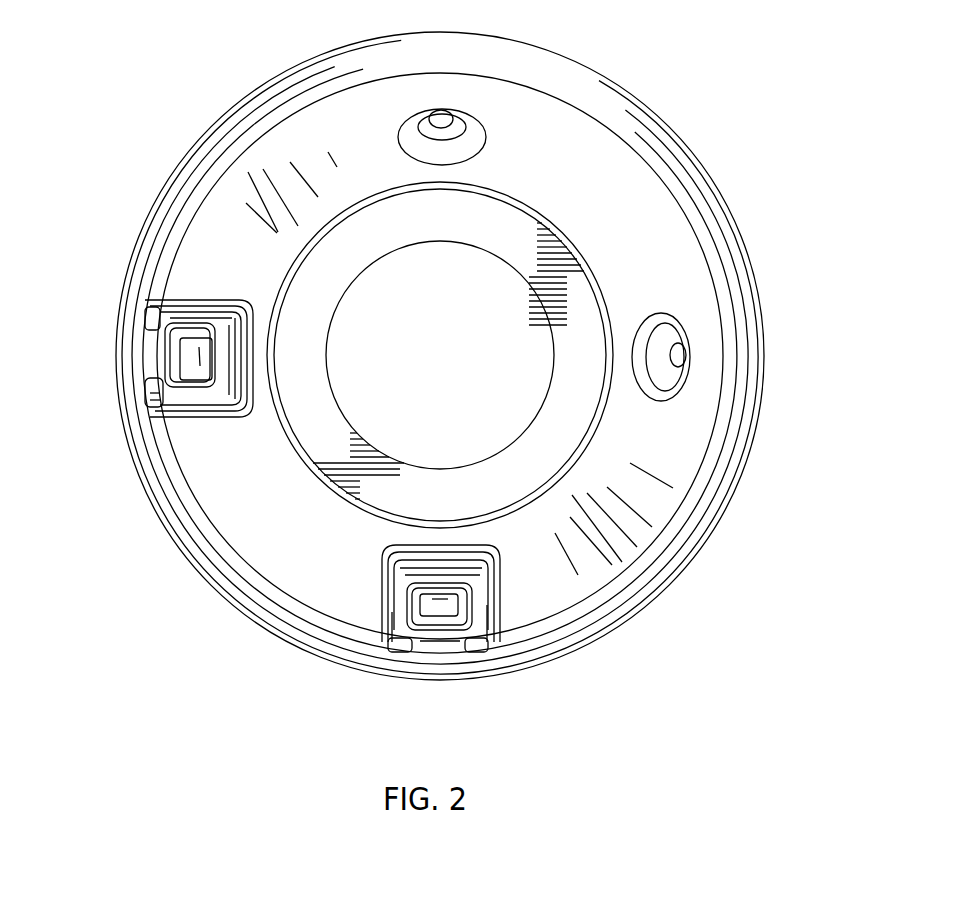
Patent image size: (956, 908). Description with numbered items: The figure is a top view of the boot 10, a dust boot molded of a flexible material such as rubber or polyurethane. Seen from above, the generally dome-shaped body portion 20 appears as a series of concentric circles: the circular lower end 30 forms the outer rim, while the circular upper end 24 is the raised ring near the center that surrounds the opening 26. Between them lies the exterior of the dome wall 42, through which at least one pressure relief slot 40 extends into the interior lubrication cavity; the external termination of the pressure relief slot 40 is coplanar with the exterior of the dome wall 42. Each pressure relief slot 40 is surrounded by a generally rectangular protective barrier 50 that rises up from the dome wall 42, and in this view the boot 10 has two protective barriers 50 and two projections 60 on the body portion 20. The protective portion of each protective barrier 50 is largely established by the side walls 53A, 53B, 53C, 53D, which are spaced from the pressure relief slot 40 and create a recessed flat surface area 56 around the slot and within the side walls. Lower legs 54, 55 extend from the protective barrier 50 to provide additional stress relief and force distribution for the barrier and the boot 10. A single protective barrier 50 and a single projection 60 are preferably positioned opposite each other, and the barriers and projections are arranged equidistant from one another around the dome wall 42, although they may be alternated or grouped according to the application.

The boot 10 is at (190, 637).
The body portion 20 is at (656, 457).
The circular upper end 24 is at (590, 246).
The opening 26 is at (427, 359).
The circular lower end 30 is at (752, 243).
The pressure relief slot 40 is at (197, 382).
The dome wall 42 is at (259, 542).
The protective barrier 50 is at (188, 286).
The side wall 53A is at (220, 350).
The side wall 53B is at (195, 406).
The side wall 53C is at (160, 355).
The side wall 53D is at (200, 317).
The lower leg 54 is at (147, 322).
The lower leg 55 is at (152, 395).
The recessed flat surface area 56 is at (198, 420).
The projection 60 is at (478, 140).